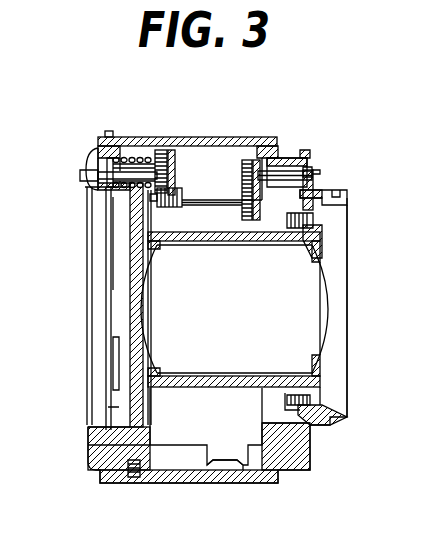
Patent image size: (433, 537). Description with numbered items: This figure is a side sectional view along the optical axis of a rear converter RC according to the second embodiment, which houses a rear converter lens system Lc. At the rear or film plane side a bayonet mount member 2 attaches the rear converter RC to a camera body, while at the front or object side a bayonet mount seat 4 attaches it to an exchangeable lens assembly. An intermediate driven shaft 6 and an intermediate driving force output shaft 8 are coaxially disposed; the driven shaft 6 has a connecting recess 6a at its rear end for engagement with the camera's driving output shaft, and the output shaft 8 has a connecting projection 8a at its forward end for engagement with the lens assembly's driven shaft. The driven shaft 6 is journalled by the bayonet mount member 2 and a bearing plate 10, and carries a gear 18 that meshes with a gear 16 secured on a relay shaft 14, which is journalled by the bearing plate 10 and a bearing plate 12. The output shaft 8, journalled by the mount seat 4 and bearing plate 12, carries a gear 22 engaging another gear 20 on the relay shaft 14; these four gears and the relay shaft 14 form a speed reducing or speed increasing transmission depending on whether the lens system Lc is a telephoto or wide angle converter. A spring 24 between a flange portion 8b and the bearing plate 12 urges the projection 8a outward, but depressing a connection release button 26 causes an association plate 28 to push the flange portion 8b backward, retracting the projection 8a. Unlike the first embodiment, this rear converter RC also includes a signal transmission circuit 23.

The bayonet mount member 2 is at (320, 193).
The bayonet mount seat 4 is at (96, 141).
The intermediate driven shaft 6 is at (291, 172).
The connecting recess 6a is at (322, 166).
The intermediate driving force output shaft 8 is at (79, 169).
The connecting projection 8a is at (81, 176).
The flange portion 8b is at (104, 186).
The bearing plate 10 is at (276, 176).
The bearing plate 12 is at (153, 156).
The relay shaft 14 is at (222, 198).
The gear 16 is at (244, 160).
The gear 18 is at (253, 150).
The gear 20 is at (190, 165).
The gear 22 is at (167, 149).
The signal transmission circuit 23 is at (233, 468).
The spring 24 is at (125, 137).
The connection release button 26 is at (104, 131).
The association plate 28 is at (85, 155).
The rear converter lens system Lc is at (246, 318).
The rear converter RC is at (194, 490).